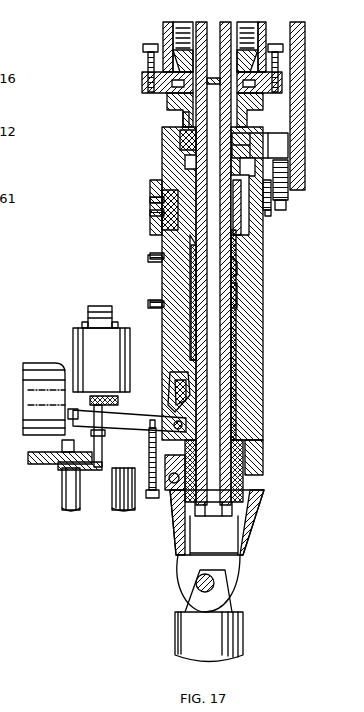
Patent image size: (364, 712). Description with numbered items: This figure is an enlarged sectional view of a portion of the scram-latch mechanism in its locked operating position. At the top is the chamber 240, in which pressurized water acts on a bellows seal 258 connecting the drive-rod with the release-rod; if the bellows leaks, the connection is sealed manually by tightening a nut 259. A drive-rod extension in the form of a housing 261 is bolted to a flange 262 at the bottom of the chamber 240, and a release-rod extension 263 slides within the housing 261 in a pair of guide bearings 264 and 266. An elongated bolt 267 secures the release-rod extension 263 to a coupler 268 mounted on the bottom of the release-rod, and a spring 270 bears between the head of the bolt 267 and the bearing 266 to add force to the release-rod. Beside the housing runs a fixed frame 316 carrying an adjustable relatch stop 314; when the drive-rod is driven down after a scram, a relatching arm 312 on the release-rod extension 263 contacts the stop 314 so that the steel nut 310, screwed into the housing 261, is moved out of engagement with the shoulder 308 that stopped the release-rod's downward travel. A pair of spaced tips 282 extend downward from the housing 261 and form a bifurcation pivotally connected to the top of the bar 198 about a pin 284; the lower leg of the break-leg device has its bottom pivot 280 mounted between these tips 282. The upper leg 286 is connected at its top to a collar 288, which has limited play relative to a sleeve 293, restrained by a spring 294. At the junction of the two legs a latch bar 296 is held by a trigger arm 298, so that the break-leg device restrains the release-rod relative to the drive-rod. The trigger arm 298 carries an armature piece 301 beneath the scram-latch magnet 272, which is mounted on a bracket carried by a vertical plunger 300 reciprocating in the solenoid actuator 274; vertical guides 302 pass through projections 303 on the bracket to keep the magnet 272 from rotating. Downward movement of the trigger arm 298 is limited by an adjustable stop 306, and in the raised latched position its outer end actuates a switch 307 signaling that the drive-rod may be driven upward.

The bar 198 is at (243, 637).
The chamber 240 is at (266, 40).
The bellows seal 258 is at (175, 40).
The nut 259 is at (167, 99).
The housing 261 is at (263, 290).
The flange 262 is at (146, 60).
The release-rod extension 263 is at (190, 127).
The guide bearing 264 is at (240, 246).
The guide bearing 266 is at (240, 420).
The elongated bolt 267 is at (215, 522).
The coupler 268 is at (178, 34).
The spring 270 is at (243, 484).
The scram-latch magnet 272 is at (73, 336).
The solenoid actuator 274 is at (66, 500).
The bottom pivot 280 is at (173, 483).
The tips 282 is at (258, 508).
The pin 284 is at (214, 588).
The upper leg 286 is at (175, 372).
The collar 288 is at (236, 268).
The sleeve 293 is at (234, 345).
The spring 294 is at (235, 296).
The latch bar 296 is at (176, 385).
The trigger arm 298 is at (143, 410).
The vertical plunger 300 is at (70, 466).
The armature piece 301 is at (100, 392).
The vertical guides 302 is at (122, 490).
The projections 303 is at (120, 470).
The adjustable stop 306 is at (152, 500).
The switch 307 is at (65, 420).
The shoulder 308 is at (185, 151).
The steel nut 310 is at (185, 170).
The relatching arm 312 is at (288, 142).
The adjustable relatch stop 314 is at (283, 218).
The fixed frame 316 is at (305, 82).